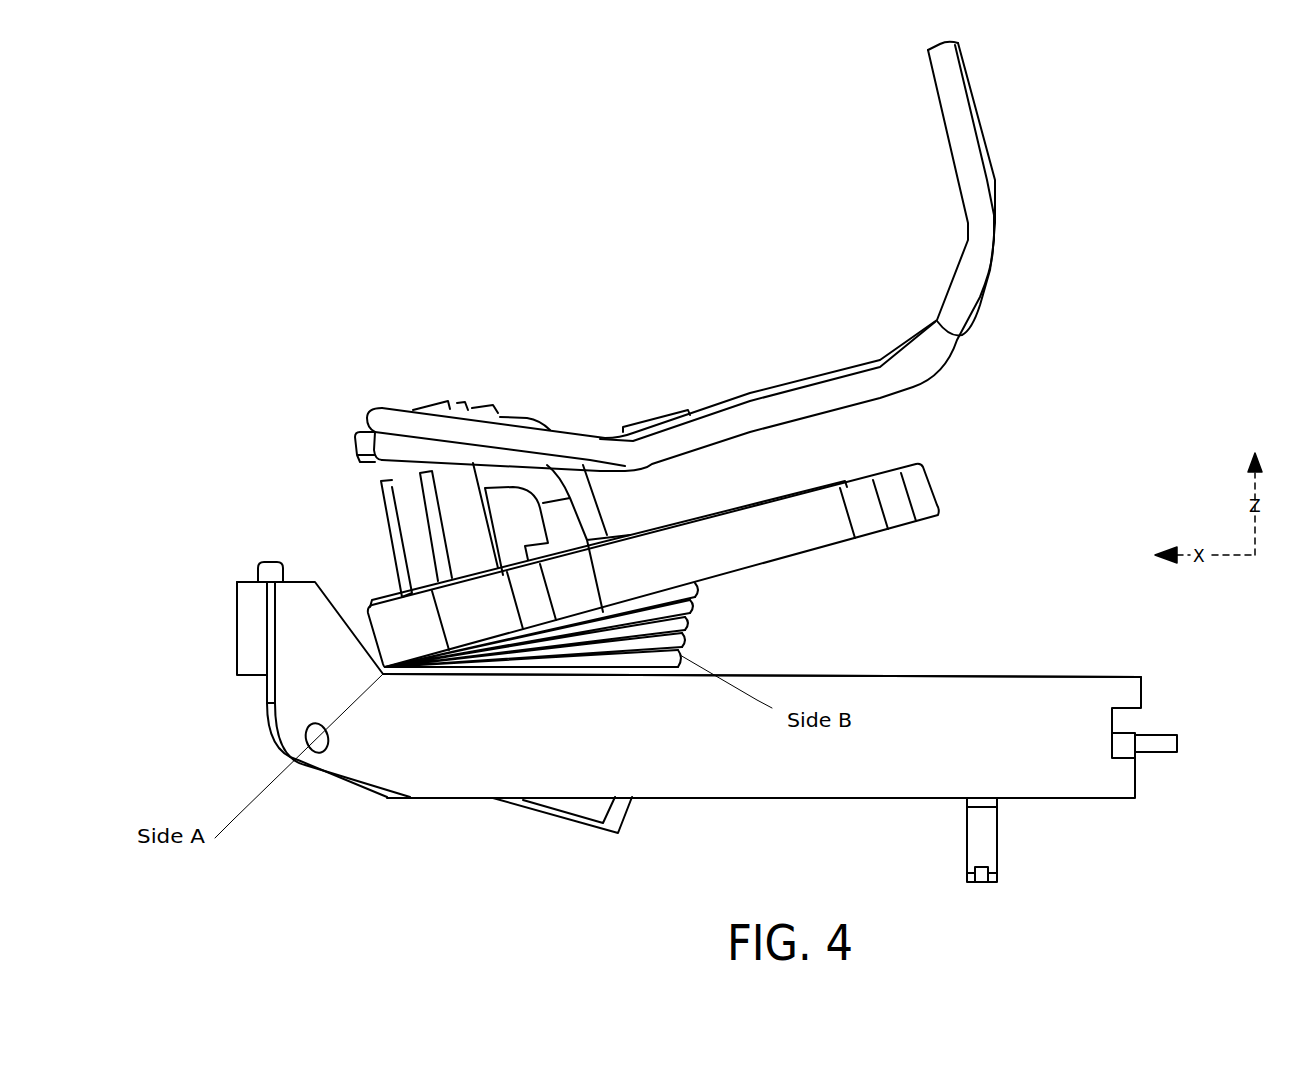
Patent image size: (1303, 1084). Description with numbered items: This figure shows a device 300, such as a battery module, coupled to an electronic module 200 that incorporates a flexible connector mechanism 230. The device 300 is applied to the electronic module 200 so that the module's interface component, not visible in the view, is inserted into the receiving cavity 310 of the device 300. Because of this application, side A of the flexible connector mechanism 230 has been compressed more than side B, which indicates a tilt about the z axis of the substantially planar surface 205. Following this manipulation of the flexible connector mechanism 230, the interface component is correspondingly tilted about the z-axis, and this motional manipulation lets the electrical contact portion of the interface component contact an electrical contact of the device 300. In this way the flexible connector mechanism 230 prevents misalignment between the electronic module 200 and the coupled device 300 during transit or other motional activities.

The electronic module 200 is at (753, 840).
The substantially planar surface 205 is at (986, 654).
The flexible connector mechanism 230 is at (690, 617).
The device 300 is at (522, 242).
The receiving cavity 310 is at (397, 520).